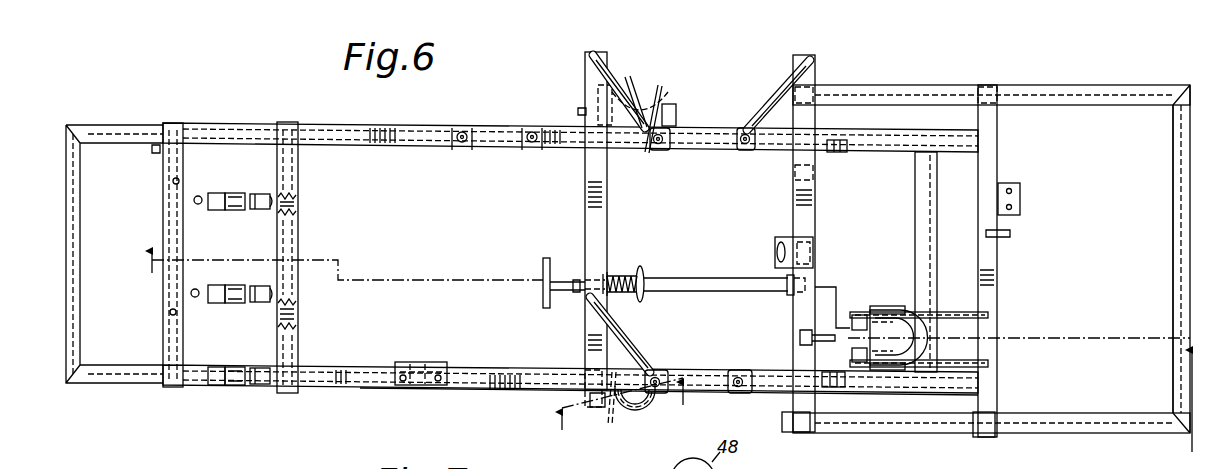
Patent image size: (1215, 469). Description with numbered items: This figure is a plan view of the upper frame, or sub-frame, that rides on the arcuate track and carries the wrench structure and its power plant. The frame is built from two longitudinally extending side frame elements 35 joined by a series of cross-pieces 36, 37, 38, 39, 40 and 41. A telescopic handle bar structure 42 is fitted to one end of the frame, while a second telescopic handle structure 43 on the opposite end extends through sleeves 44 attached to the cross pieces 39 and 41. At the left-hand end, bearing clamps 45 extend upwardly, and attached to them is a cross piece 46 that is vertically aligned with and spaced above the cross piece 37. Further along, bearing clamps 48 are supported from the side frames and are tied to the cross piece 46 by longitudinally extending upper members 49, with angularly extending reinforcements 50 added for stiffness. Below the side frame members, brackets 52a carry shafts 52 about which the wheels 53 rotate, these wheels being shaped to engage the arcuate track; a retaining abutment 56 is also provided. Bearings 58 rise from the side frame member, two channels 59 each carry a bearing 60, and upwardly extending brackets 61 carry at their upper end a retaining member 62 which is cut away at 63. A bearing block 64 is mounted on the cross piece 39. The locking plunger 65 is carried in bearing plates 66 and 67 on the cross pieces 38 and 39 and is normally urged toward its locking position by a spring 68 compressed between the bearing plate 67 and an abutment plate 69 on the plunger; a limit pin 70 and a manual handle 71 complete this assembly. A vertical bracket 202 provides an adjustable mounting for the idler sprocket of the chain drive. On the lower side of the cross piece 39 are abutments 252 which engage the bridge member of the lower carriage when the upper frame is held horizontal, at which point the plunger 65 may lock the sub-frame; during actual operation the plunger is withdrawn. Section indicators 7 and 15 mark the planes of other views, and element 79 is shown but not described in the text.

The section line 7- 7 is at (669, 360).
The section line 15- 15 is at (632, 415).
The side frame elements 35 is at (508, 127).
The cross-piece 36 is at (183, 235).
The cross-piece 37 is at (300, 228).
The cross-piece 38 is at (585, 205).
The cross-piece 39 is at (815, 200).
The cross-piece 40 is at (915, 212).
The cross-piece 41 is at (988, 172).
The telescopic handle bar structure 42 is at (82, 296).
The second telescopic handle structure 43 is at (1173, 235).
The sleeves 44 is at (808, 93).
The bearing clamps 45 is at (232, 193).
The cross piece 46 is at (297, 255).
The bearing clamps 48 is at (713, 128).
The upper members 49 is at (384, 136).
The reinforcements 50 is at (610, 75).
The shafts 52 is at (663, 95).
The brackets 52a is at (676, 114).
The wheels 53 is at (648, 92).
The retaining abutment 56 is at (578, 110).
The bearings 58 is at (838, 153).
The channels 59 is at (985, 362).
The bearing 60 is at (853, 325).
The brackets 61 is at (897, 308).
The retaining member 62 is at (915, 332).
The cut-away 63 is at (882, 312).
The bearing block 64 is at (775, 248).
The locking plunger 65 is at (700, 278).
The bearing plate 66 is at (787, 295).
The bearing plate 67 is at (618, 272).
The spring 68 is at (636, 268).
The abutment plate 69 is at (643, 268).
The limit pin 70 is at (578, 278).
The manual handle 71 is at (543, 263).
The hinge 79 is at (1020, 203).
The vertical bracket 202 is at (420, 362).
The abutments 252 is at (793, 172).